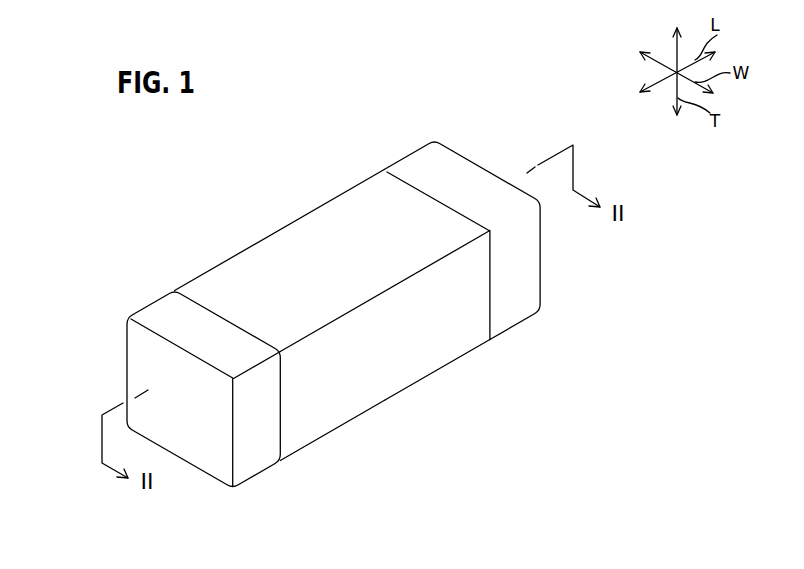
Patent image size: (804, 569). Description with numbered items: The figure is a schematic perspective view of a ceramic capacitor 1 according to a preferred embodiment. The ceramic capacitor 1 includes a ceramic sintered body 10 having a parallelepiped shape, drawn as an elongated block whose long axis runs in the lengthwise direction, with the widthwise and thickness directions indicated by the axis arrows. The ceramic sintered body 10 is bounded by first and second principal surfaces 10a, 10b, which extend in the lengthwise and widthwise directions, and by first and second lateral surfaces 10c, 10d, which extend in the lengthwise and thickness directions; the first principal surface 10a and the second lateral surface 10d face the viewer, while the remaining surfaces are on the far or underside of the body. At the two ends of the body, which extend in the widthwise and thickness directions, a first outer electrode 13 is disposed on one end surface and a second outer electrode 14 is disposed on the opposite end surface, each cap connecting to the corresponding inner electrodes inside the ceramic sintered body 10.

The ceramic capacitor 1 is at (432, 115).
The ceramic sintered body 10 is at (452, 360).
The first principal surface 10a is at (345, 212).
The second principal surface 10b is at (377, 402).
The first lateral surface 10c is at (300, 227).
The second lateral surface 10d is at (322, 423).
The first outer electrode 13 is at (198, 462).
The second outer electrode 14 is at (542, 277).